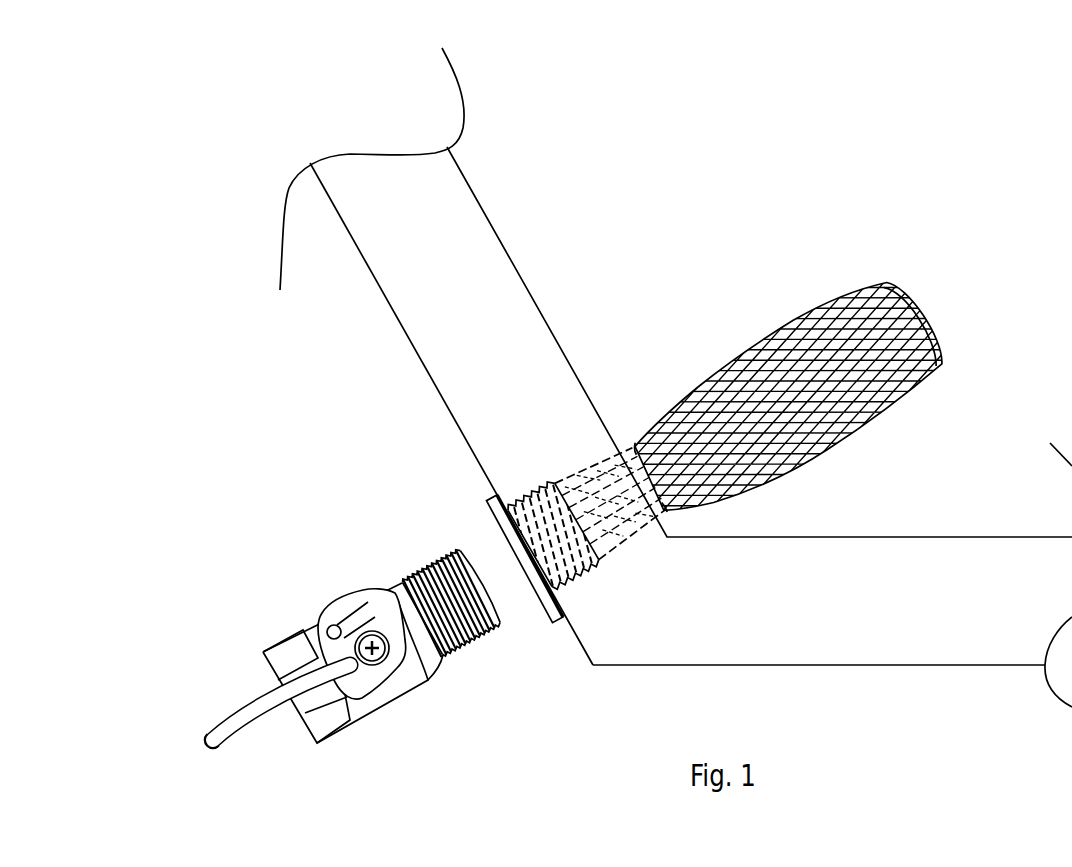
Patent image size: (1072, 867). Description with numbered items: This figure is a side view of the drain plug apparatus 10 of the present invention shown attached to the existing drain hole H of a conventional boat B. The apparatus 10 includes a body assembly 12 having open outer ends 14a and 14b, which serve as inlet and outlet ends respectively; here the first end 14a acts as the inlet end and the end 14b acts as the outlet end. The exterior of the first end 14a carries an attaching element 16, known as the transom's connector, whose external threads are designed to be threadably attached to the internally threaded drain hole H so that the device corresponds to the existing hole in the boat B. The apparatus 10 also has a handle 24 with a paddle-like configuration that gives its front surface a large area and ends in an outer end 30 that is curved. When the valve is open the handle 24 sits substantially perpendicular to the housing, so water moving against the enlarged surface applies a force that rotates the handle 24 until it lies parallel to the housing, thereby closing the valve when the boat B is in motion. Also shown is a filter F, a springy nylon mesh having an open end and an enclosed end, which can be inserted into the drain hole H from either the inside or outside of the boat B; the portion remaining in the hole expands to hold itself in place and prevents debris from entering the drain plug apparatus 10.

The drain plug apparatus 10 is at (358, 654).
The body assembly 12 is at (285, 638).
The first end 14a is at (493, 603).
The outer end 14b is at (265, 667).
The attaching element 16 is at (458, 650).
The handle 24 is at (233, 738).
The outer end 30 is at (210, 733).
The boat B is at (443, 402).
The filter F is at (788, 327).
The drain hole H is at (610, 553).